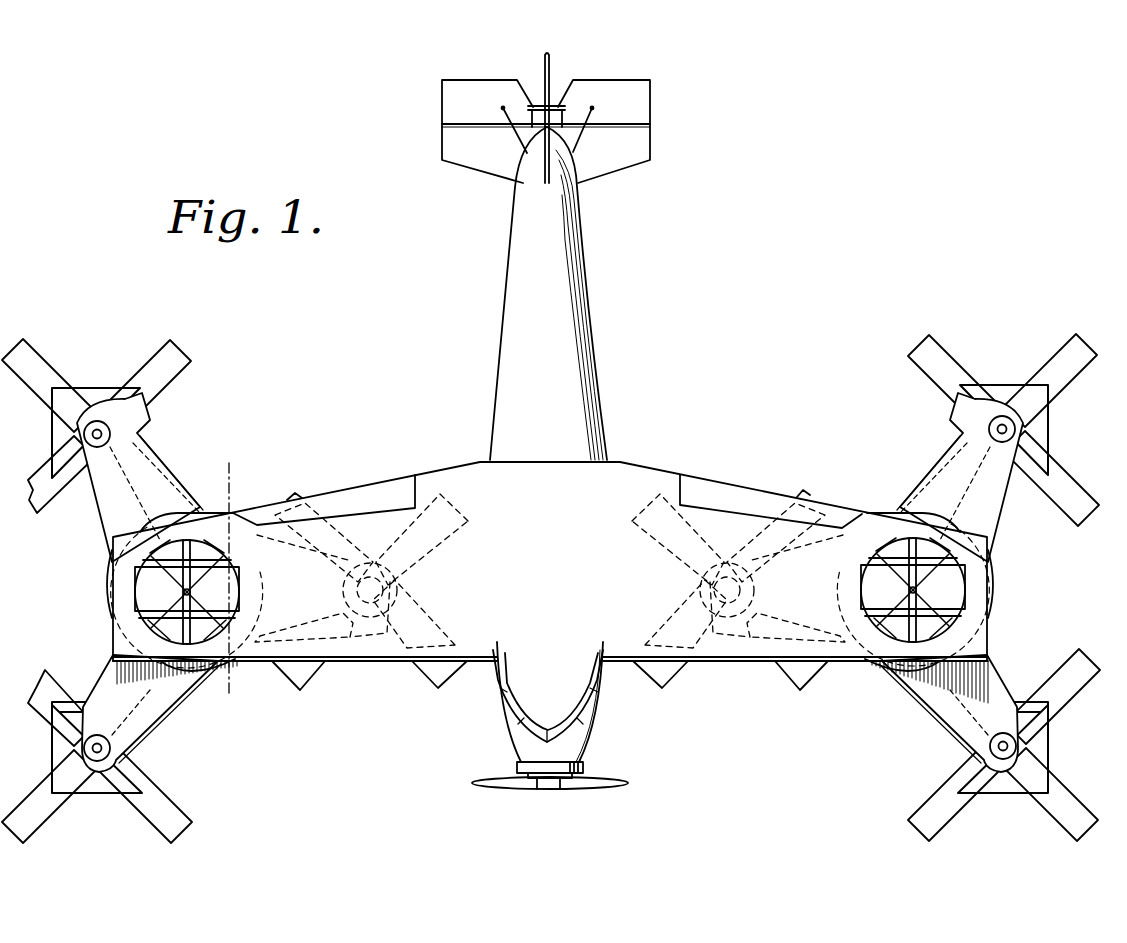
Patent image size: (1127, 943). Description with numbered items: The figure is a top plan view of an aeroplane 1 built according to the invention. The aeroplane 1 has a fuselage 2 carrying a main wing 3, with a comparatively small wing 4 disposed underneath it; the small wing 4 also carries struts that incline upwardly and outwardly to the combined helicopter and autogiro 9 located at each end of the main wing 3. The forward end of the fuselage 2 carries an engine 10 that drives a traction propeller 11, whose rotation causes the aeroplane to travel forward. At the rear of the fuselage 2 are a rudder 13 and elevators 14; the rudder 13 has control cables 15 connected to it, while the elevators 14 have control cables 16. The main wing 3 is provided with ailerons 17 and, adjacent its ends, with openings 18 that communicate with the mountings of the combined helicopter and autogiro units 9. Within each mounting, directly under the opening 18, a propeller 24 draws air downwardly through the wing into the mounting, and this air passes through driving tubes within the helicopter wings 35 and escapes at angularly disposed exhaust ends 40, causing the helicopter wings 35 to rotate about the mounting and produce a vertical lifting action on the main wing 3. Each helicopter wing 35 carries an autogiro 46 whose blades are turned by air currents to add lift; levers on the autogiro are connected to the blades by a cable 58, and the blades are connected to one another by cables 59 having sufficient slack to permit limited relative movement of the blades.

The aeroplane 1 is at (478, 445).
The fuselage 2 is at (617, 415).
The main wing 3 is at (550, 582).
The comparatively small wing 4 is at (226, 581).
The combined helicopter and autogiro 9 is at (158, 462).
The engine 10 is at (580, 765).
The traction propeller 11 is at (523, 795).
The rudder 13 is at (552, 57).
The elevators 14 is at (640, 83).
The control cables 15 is at (563, 117).
The control cables 16 is at (578, 137).
The ailerons 17 is at (340, 492).
The openings 18 is at (127, 586).
The propeller 24 is at (210, 573).
The helicopter wings 35 is at (147, 708).
The exhaust ends 40 is at (148, 418).
The autogiro 46 is at (40, 360).
The cable 58 is at (70, 783).
The cables 59 is at (52, 748).